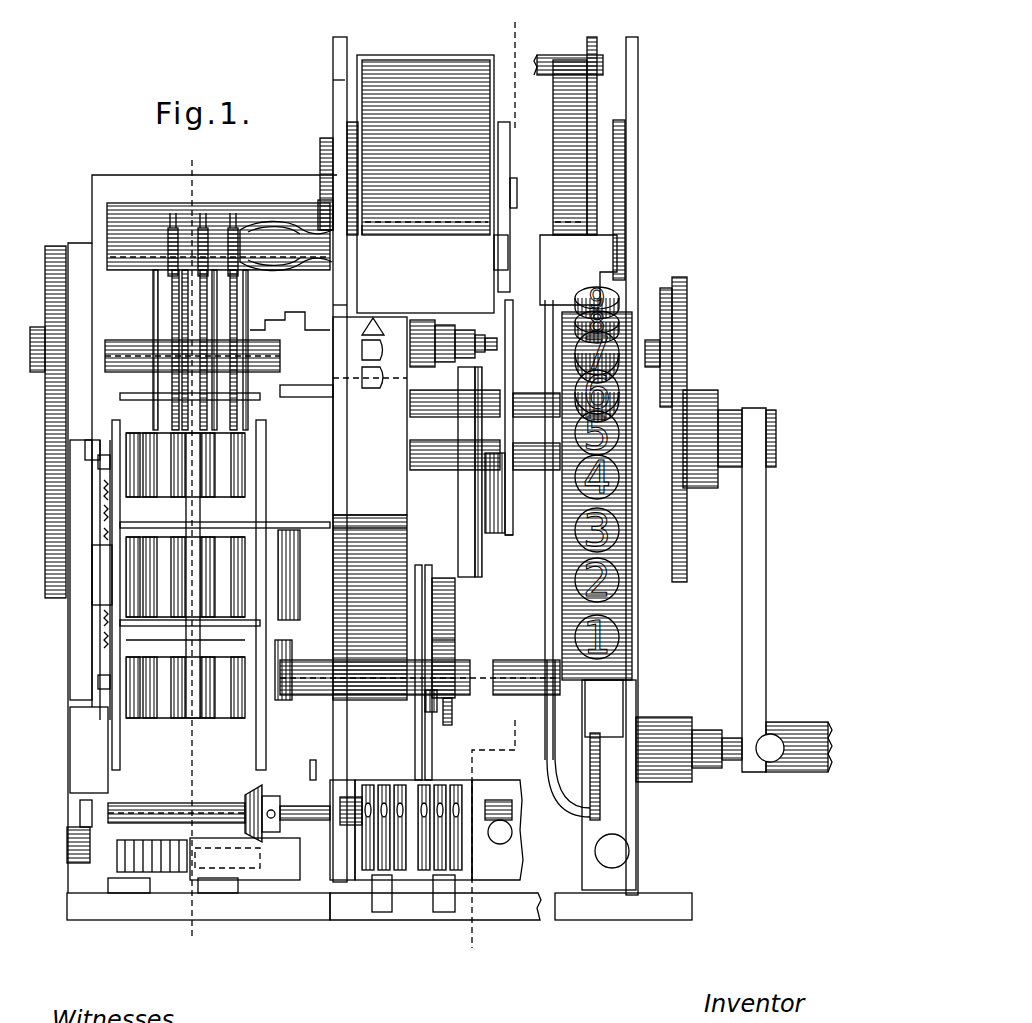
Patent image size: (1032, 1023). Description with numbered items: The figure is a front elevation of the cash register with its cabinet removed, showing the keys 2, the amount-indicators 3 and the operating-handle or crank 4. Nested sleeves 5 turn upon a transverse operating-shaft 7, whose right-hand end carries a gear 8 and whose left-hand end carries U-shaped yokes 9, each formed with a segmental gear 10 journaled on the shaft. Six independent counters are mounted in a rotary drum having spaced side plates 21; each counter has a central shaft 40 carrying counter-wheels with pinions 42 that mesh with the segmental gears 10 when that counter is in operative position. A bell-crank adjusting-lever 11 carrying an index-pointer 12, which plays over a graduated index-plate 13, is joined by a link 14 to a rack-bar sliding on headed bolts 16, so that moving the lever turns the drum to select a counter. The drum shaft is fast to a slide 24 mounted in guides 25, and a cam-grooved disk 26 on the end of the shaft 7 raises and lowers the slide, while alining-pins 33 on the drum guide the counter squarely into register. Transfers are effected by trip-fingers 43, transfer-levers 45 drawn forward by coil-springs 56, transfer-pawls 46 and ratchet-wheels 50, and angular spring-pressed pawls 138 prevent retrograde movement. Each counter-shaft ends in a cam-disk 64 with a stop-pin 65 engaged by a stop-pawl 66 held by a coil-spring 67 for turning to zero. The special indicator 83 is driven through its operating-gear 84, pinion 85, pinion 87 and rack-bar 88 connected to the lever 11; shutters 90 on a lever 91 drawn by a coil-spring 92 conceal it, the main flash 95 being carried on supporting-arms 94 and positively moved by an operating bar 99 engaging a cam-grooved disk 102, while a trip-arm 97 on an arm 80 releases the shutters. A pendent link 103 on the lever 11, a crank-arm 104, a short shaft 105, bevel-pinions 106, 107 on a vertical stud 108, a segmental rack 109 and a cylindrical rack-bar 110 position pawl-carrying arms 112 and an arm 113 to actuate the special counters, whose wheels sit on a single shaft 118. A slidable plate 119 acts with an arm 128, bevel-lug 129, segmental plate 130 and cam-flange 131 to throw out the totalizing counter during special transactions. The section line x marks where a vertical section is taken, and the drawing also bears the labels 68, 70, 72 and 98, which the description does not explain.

The keys 2 is at (640, 596).
The amount-indicators 3 is at (562, 66).
The operating-handle 4 is at (745, 603).
The cylinder 5 is at (445, 325).
The transverse operating-shaft 7 is at (476, 340).
The gear 8 is at (688, 318).
The U-shaped yokes 9 is at (258, 340).
The segmental gear 10 is at (153, 290).
The adjusting-lever 11 is at (333, 275).
The index-pointer 12 is at (340, 312).
The index-plate 13 is at (380, 535).
The link 14 is at (285, 640).
The headed bolts 16 is at (286, 702).
The side plates 21 is at (92, 548).
The slide 24 is at (70, 660).
The guides 25 is at (105, 328).
The cam-grooved disk 26 is at (55, 246).
The alining-pins 33 is at (300, 570).
The central shaft 40 is at (98, 470).
The pinions 42 is at (165, 718).
The trip-finger 43 is at (150, 432).
The transfer-levers 45 is at (153, 285).
The transfer-pawls 46 is at (248, 330).
The ratchet-wheel 50 is at (210, 718).
The coil-springs 56 is at (200, 228).
The cam-disk 64 is at (85, 458).
The stop-pin 65 is at (104, 486).
The stop-pawl 66 is at (104, 508).
The coil-spring 67 is at (104, 528).
The key panel 68 is at (333, 420).
The bar 70 is at (320, 397).
The cylinder 72 is at (500, 395).
The arm 80 is at (458, 488).
The special indicator 83 is at (420, 68).
The operating-gear 84 is at (347, 130).
The pinion 85 is at (364, 224).
The pinion 87 is at (320, 205).
The rack-bar 88 is at (320, 150).
The shutters 90 is at (432, 176).
The lever 91 is at (347, 80).
The coil-spring 92 is at (518, 228).
The supporting-arms 94 is at (510, 128).
The main flash 95 is at (528, 292).
The trip-arm 97 is at (513, 322).
The pin 98 is at (515, 198).
The operating bar 99 is at (513, 480).
The cam-grooved disk 102 is at (507, 536).
The pendent link 103 is at (340, 527).
The crank-arm 104 is at (310, 768).
The short shaft 105 is at (293, 805).
The bevel-pinion 106 is at (243, 800).
The bevel-pinion 107 is at (205, 842).
The vertical stud 108 is at (232, 882).
The segmental rack 109 is at (345, 845).
The cylindrical rack-bar 110 is at (145, 878).
The pawl-carrying arms 112 is at (365, 862).
The arm 113 is at (372, 898).
The shaft 118 is at (497, 800).
The slidable plate 119 is at (415, 718).
The arm 128 is at (440, 738).
The bevel-lug 129 is at (452, 706).
The segmental plate 130 is at (455, 600).
The cam-flange 131 is at (455, 622).
The spring-pressed pawls 138 is at (225, 633).
The section line x is at (490, 484).